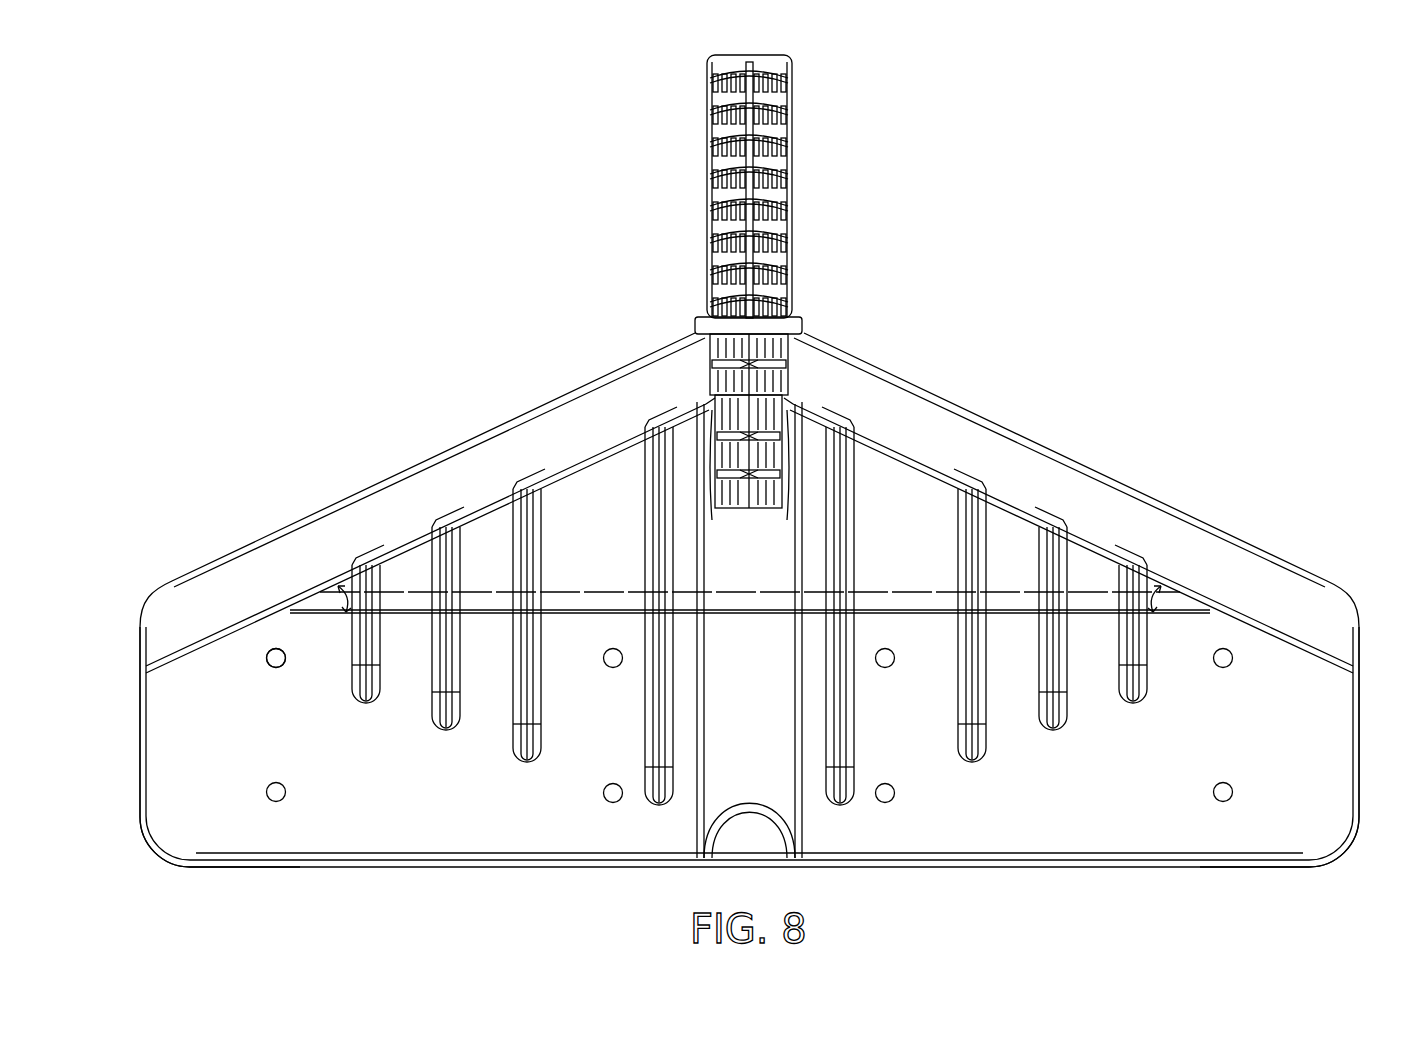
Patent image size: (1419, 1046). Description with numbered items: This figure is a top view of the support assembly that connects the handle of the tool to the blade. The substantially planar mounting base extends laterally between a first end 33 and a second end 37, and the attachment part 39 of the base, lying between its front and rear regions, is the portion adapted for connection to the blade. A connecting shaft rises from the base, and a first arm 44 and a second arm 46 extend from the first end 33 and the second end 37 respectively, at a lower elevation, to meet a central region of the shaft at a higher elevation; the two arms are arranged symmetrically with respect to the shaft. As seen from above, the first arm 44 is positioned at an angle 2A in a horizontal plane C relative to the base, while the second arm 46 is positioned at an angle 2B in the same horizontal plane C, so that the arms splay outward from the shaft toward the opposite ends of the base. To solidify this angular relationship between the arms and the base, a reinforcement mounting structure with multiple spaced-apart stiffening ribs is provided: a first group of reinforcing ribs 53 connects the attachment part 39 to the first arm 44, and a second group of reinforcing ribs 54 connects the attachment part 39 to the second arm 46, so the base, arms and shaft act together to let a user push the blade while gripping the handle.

The first end 33 is at (195, 748).
The second end 37 is at (1303, 748).
The first arm 44 is at (504, 481).
The second arm 46 is at (1024, 481).
The first group of reinforcing ribs 53 is at (522, 652).
The second group of reinforcing ribs 54 is at (975, 652).
The attachment part 39 is at (617, 708).
The angle 2A is at (350, 584).
The angle 2B is at (1149, 584).
The horizontal plane C is at (258, 724).